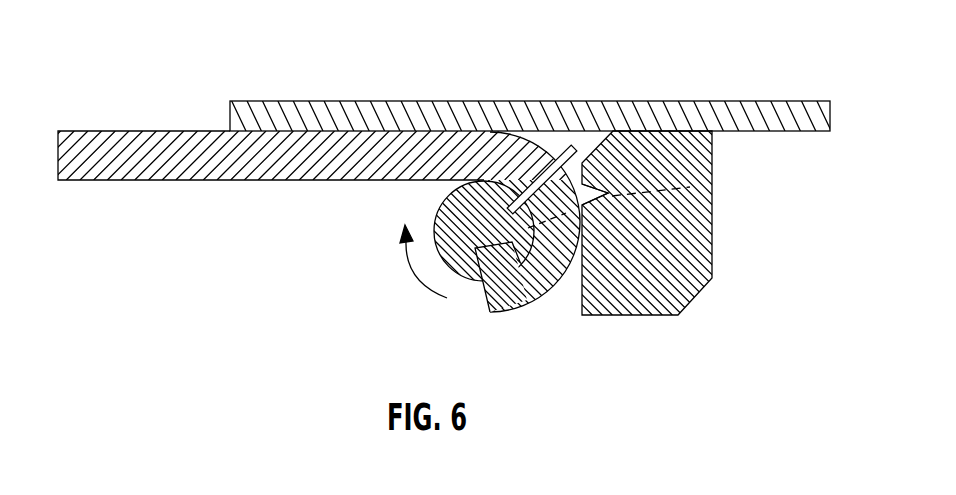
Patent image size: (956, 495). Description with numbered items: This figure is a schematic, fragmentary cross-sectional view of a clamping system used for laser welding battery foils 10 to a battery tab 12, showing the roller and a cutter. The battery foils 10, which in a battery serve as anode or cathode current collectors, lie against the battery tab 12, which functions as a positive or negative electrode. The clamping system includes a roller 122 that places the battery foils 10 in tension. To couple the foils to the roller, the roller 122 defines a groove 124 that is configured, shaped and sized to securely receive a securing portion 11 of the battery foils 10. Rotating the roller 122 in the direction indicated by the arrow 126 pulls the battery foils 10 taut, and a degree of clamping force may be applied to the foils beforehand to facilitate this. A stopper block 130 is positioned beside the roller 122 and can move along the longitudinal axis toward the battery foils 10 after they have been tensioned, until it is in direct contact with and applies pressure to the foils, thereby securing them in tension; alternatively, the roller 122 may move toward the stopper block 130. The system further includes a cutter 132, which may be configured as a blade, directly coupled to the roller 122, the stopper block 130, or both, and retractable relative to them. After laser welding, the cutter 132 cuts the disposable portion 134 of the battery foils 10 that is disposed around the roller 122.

The battery foils 10 is at (98, 130).
The securing portion 11 is at (501, 272).
The battery tab 12 is at (790, 101).
The roller 122 is at (436, 207).
The groove 124 is at (482, 279).
The arrow 126 is at (418, 276).
The stopper block 130 is at (696, 300).
The cutter 132 is at (580, 195).
The disposable portion 134 is at (548, 280).